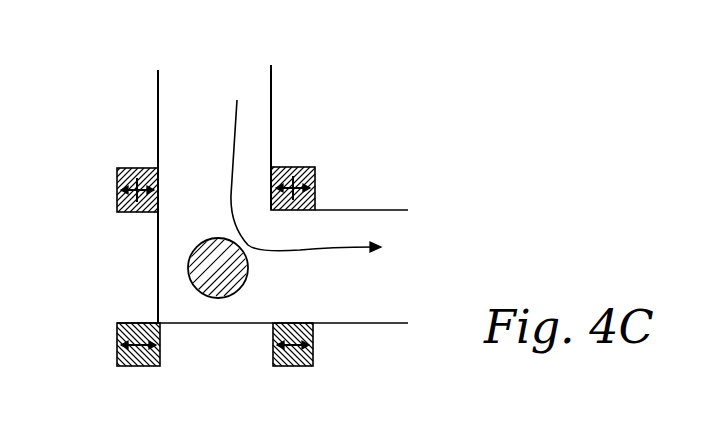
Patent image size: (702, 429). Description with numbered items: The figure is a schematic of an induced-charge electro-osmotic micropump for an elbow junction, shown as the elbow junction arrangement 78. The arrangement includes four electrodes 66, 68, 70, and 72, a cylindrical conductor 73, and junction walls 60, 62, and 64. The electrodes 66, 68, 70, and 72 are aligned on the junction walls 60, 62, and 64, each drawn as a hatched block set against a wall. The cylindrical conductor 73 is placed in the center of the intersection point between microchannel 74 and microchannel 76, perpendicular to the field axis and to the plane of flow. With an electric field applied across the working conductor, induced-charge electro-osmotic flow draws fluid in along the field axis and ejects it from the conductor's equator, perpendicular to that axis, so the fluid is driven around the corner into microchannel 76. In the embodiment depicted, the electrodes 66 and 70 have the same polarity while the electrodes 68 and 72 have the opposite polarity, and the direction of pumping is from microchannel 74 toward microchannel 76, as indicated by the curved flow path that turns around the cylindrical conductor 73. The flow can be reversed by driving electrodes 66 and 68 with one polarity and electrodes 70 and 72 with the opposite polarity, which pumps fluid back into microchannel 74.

The junction wall 60 is at (142, 106).
The junction wall 62 is at (358, 116).
The junction wall 64 is at (226, 337).
The electrode 66 is at (118, 170).
The electrode 68 is at (127, 323).
The electrode 70 is at (315, 168).
The electrode 72 is at (313, 362).
The cylindrical conductor 73 is at (247, 279).
The microchannel 74 is at (258, 126).
The microchannel 76 is at (407, 222).
The elbow junction arrangement 78 is at (441, 120).